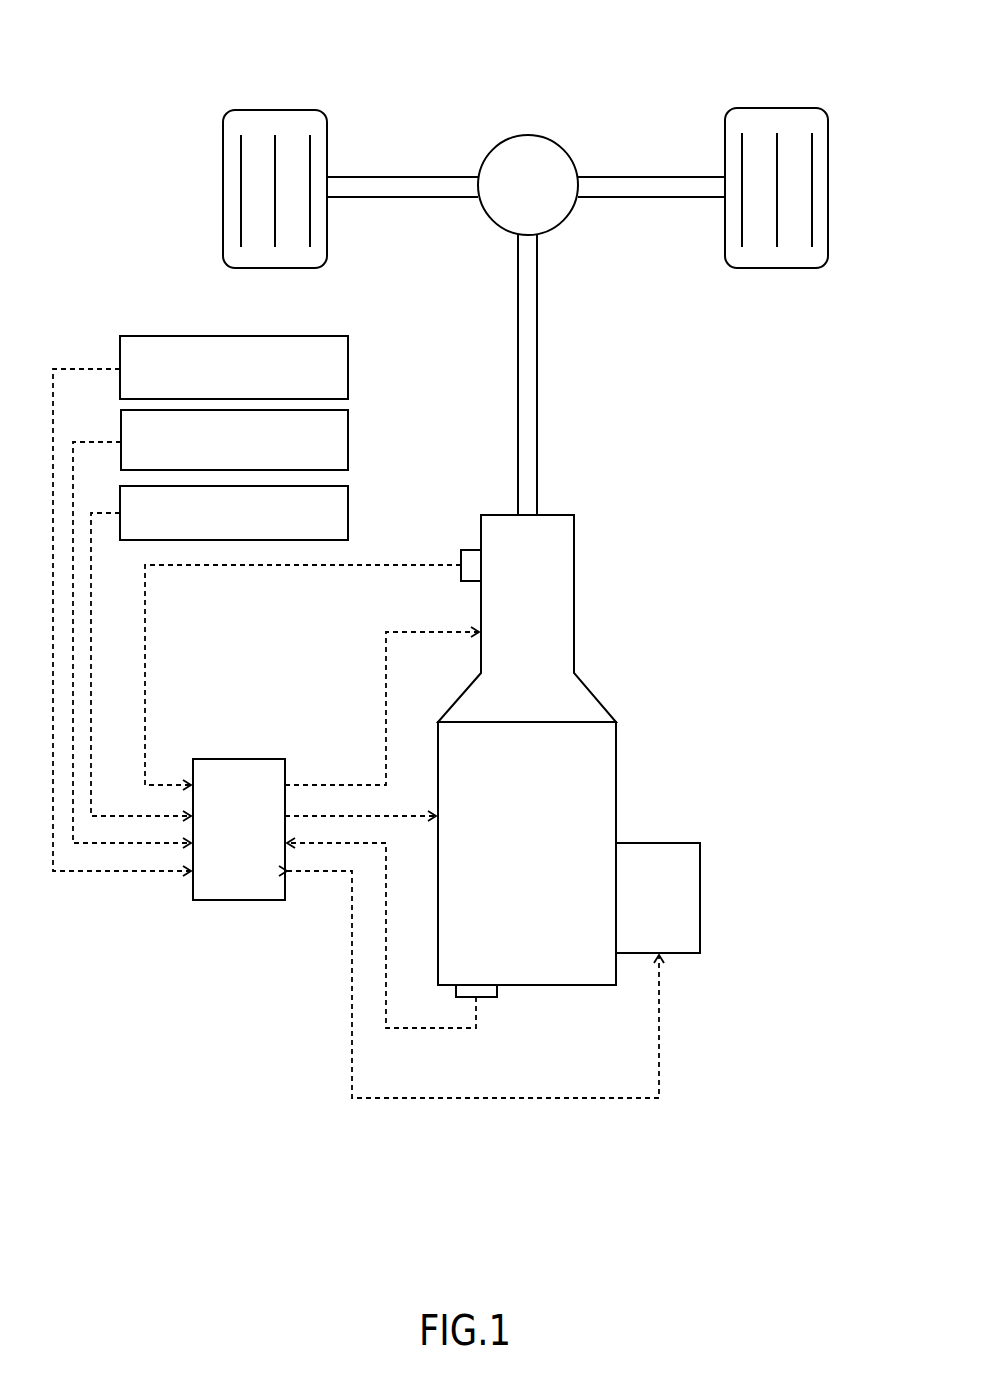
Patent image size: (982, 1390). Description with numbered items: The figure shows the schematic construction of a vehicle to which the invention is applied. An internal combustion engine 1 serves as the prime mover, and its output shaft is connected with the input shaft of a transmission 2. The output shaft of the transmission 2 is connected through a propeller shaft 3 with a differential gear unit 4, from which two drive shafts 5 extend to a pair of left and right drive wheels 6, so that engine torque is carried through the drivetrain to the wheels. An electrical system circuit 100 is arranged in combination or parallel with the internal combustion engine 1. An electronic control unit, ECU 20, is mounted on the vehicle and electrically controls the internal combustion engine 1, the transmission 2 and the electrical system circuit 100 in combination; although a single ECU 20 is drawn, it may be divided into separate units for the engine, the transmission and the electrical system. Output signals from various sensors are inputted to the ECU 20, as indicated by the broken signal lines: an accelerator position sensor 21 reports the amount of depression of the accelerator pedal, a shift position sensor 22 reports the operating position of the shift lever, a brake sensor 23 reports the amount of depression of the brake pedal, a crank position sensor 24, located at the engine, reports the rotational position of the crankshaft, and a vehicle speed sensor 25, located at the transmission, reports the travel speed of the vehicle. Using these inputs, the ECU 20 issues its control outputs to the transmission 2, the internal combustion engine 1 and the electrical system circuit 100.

The internal combustion engine 1 is at (616, 765).
The transmission 2 is at (574, 595).
The propeller shaft 3 is at (537, 383).
The differential gear unit 4 is at (526, 135).
The drive shafts 5 is at (397, 183).
The drive wheels 6 is at (278, 110).
The electronic control unit (ECU) 20 is at (240, 900).
The accelerator position sensor 21 is at (348, 363).
The shift position sensor 22 is at (348, 437).
The brake sensor 23 is at (348, 512).
The crank position sensor 24 is at (497, 998).
The vehicle speed sensor 25 is at (472, 550).
The electrical system circuit 100 is at (700, 895).